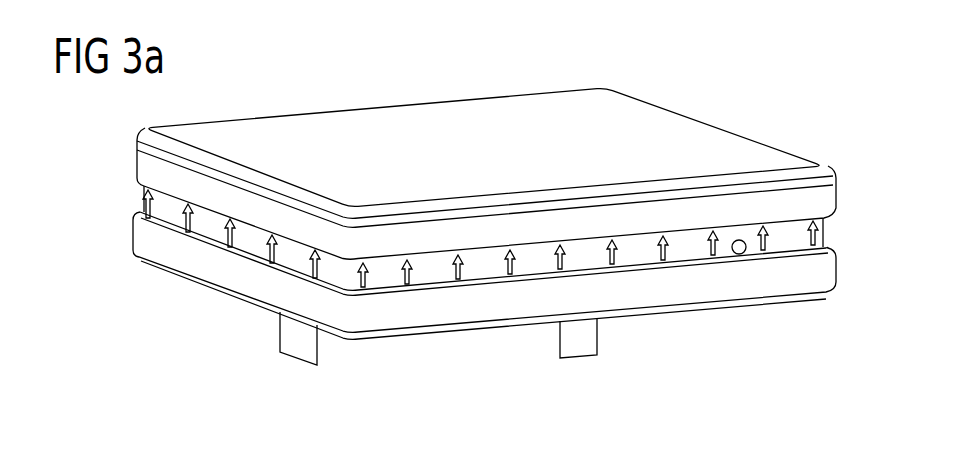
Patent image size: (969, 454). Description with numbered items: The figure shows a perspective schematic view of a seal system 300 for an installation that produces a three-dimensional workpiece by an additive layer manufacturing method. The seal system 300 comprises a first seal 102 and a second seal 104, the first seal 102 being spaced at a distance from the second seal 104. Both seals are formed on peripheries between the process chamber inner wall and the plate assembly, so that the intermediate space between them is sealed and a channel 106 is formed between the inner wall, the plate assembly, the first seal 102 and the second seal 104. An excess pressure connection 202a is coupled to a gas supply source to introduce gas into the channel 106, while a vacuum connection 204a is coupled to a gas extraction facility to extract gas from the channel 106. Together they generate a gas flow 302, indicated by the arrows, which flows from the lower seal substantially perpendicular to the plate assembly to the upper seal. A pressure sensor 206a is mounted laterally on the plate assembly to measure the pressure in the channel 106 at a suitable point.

The first seal 102 is at (134, 157).
The second seal 104 is at (207, 257).
The channel 106 is at (168, 213).
The excess pressure connection 202a is at (560, 347).
The vacuum connection 204a is at (280, 338).
The pressure sensor 206a is at (746, 252).
The gas flow 302 is at (733, 253).
The seal system 300 is at (655, 343).